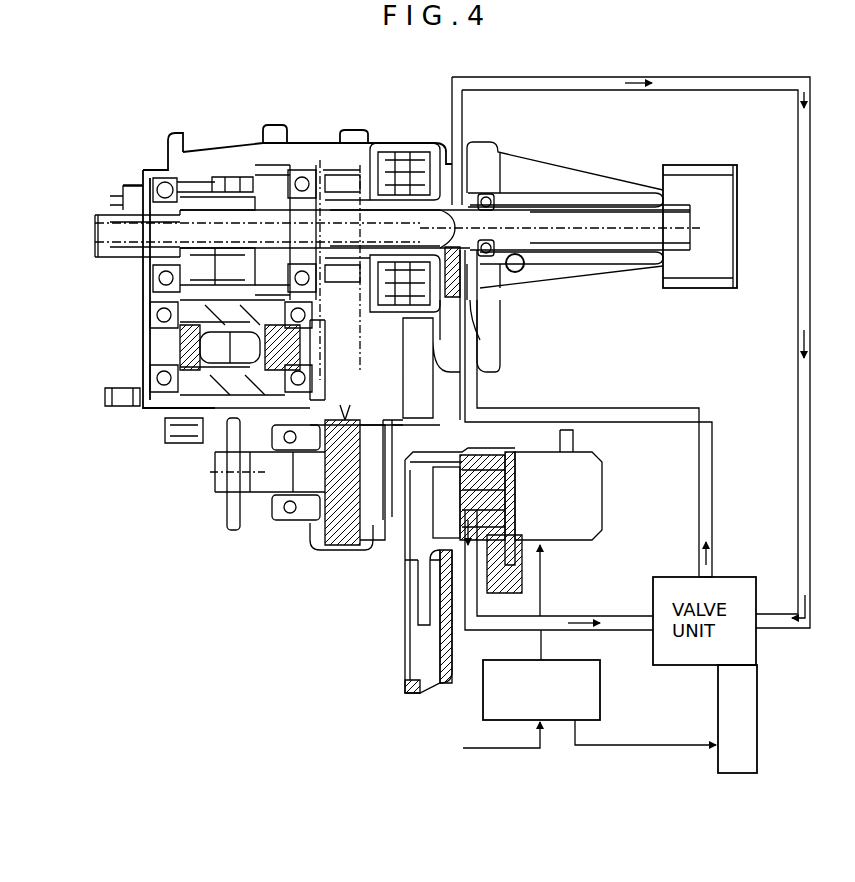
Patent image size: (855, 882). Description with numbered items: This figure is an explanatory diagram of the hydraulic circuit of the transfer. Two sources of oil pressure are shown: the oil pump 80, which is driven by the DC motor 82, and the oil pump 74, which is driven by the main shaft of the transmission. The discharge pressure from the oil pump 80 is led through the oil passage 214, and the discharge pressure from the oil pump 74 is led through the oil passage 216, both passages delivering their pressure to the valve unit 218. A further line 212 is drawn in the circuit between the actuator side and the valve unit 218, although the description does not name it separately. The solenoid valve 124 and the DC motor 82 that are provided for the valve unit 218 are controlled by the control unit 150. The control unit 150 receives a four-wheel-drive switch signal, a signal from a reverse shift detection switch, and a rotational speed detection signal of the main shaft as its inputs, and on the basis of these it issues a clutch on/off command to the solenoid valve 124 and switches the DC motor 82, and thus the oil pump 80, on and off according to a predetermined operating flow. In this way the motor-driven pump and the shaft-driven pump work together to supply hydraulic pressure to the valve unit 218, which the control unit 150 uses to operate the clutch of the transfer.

The oil pump 74 is at (532, 158).
The oil pump 80 is at (506, 449).
The DC motor 82 is at (586, 507).
The hydraulic line 212 is at (582, 614).
The oil passage 214 is at (798, 333).
The oil passage 216 is at (650, 407).
The valve unit 218 is at (727, 577).
The control unit 150 is at (600, 697).
The solenoid valve 124 is at (757, 700).